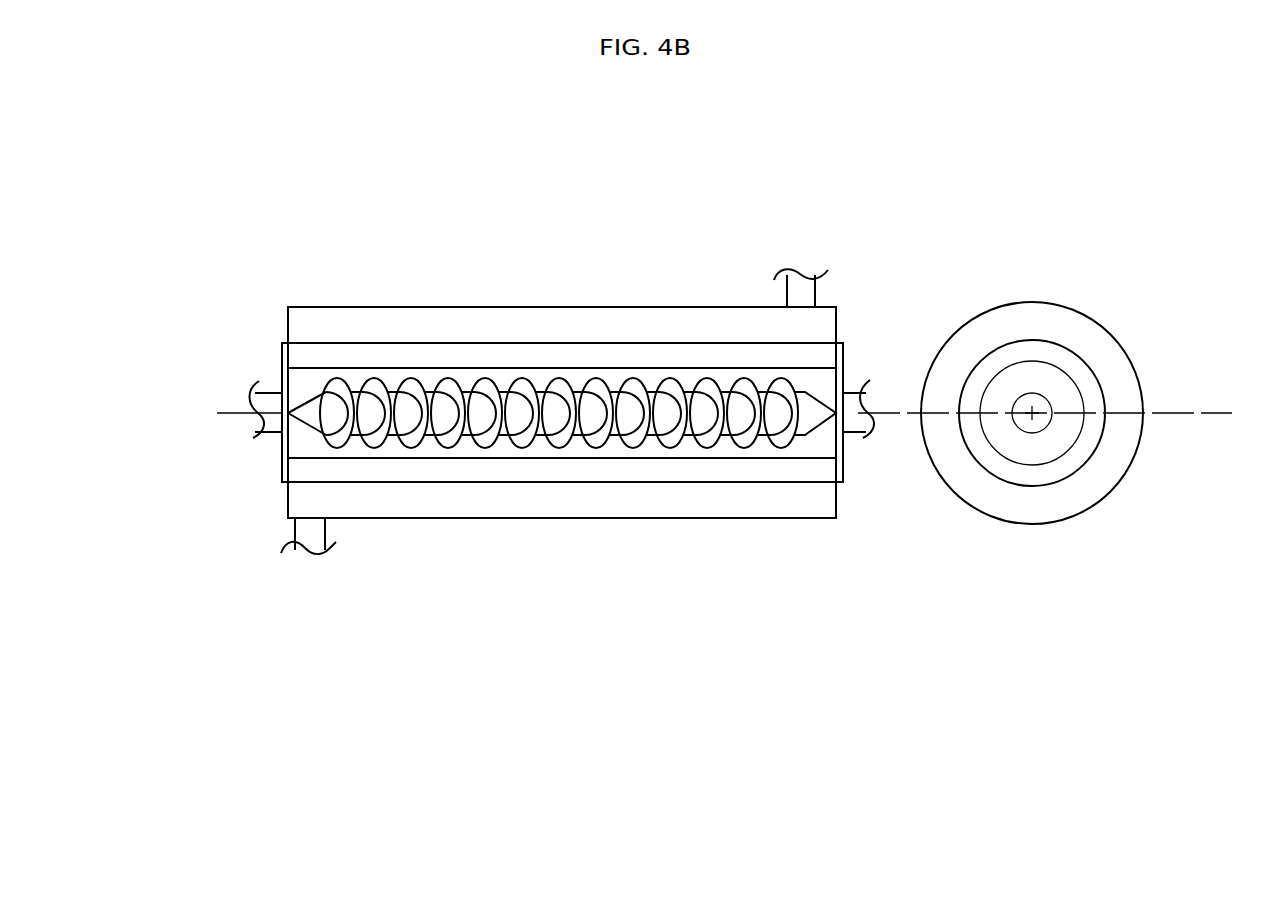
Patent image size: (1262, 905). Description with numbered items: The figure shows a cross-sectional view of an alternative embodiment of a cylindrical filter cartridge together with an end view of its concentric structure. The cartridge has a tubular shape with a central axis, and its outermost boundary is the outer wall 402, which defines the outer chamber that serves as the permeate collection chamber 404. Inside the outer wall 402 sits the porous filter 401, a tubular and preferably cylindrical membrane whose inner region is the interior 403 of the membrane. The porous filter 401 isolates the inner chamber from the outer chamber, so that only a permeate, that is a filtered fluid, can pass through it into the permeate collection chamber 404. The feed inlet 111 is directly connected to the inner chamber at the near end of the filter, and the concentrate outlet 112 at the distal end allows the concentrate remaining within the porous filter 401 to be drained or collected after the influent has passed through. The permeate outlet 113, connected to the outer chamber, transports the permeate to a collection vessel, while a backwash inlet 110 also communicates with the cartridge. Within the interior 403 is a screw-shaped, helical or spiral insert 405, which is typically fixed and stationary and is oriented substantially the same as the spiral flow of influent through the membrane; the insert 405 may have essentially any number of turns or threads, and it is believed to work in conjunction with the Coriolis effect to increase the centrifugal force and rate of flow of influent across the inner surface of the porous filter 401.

The permeate collection chamber 404 is at (432, 320).
The interior of the porous filter membrane 403 is at (690, 452).
The screw-shaped insert 405 is at (598, 385).
The backwash inlet 110 is at (800, 260).
The feed inlet 111 is at (883, 378).
The concentrate outlet 112 is at (178, 409).
The permeate outlet 113 is at (312, 566).
The outer wall 402 is at (1098, 322).
The porous filter 401 is at (1093, 368).